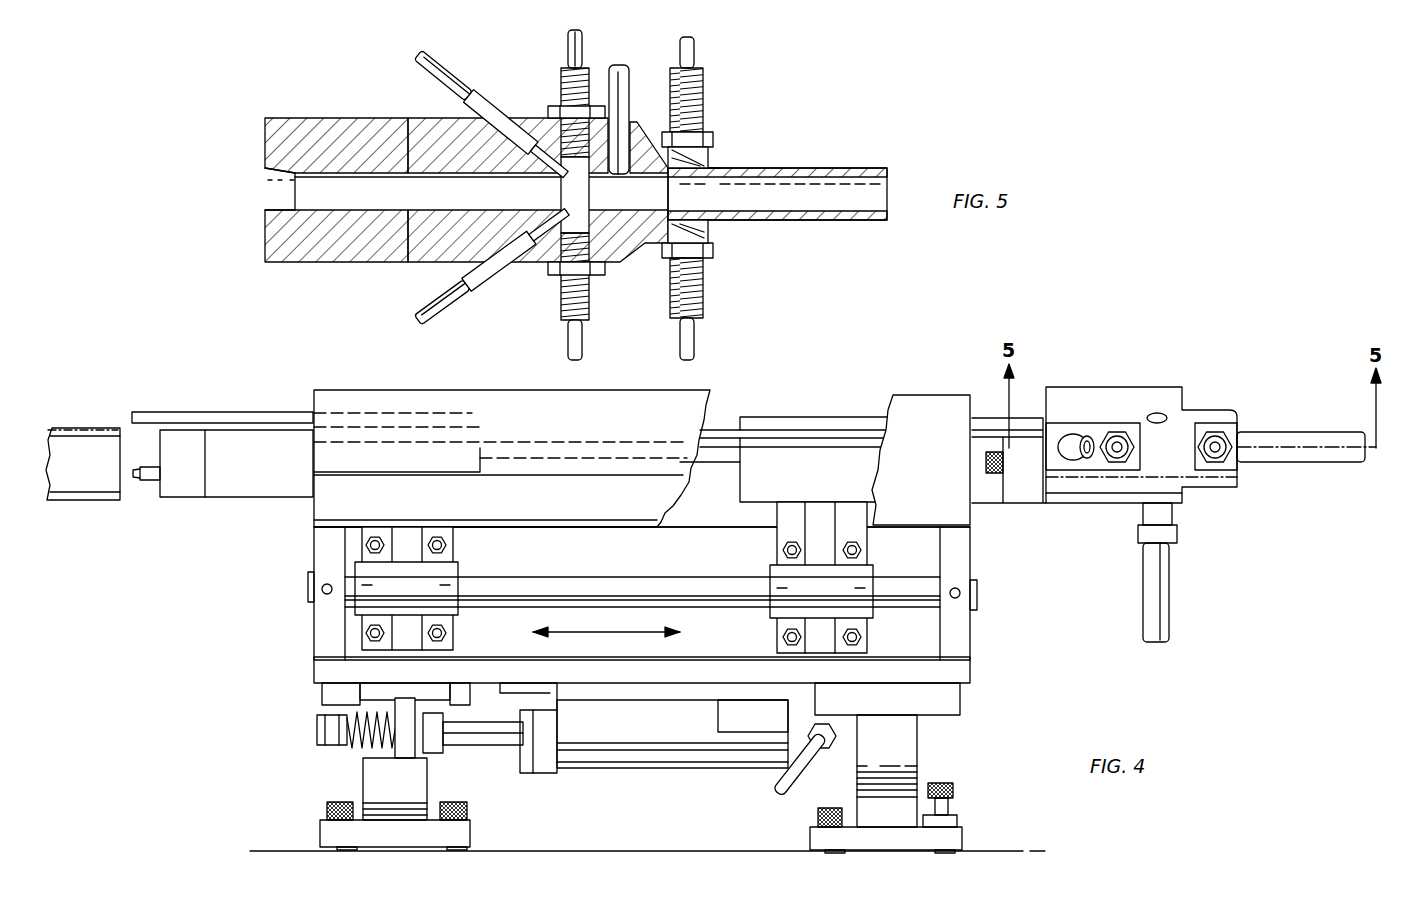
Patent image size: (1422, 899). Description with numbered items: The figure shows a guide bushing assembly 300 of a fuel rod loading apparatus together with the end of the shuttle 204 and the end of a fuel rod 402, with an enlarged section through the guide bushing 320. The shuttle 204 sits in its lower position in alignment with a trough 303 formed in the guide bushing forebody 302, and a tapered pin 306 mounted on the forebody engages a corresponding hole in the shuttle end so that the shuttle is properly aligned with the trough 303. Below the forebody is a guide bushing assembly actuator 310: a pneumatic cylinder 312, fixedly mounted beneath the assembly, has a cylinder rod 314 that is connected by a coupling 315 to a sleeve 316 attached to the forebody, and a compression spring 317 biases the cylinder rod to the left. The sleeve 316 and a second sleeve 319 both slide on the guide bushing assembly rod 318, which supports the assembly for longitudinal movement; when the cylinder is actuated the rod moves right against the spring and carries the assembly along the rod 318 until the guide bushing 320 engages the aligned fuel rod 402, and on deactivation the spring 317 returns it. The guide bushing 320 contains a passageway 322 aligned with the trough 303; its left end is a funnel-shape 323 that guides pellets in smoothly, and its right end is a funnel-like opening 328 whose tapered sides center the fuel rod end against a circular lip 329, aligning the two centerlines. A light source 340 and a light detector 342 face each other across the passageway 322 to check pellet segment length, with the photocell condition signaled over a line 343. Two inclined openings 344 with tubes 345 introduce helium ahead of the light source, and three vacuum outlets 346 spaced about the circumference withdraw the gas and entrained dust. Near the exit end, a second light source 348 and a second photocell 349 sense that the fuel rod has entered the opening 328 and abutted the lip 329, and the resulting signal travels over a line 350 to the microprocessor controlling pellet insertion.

In FIG. 4, the shuttle 204 is at (92, 440).
In FIG. 4, the guide bushing assembly 300 is at (1030, 542).
In FIG. 4, the guide bushing forebody 302 is at (558, 498).
In FIG. 4, the trough 303 is at (720, 443).
In FIG. 4, the tapered pin 306 is at (146, 482).
In FIG. 4, the guide bushing assembly actuator 310 is at (545, 790).
In FIG. 4, the pneumatic cylinder 312 is at (660, 742).
In FIG. 4, the cylinder rod 314 is at (473, 745).
In FIG. 4, the coupling 315 is at (407, 746).
In FIG. 4, the sleeve 316 is at (458, 568).
In FIG. 4, the compression spring 317 is at (357, 750).
In FIG. 4, the guide bushing assembly rod 318 is at (617, 578).
In FIG. 4, the second sleeve 319 is at (778, 568).
In FIG. 5, the guide bushing 320 is at (383, 284).
In FIG. 4, the guide bushing 320 is at (1130, 370).
In FIG. 5, the passageway 322 is at (470, 205).
In FIG. 5, the funnel-shape 323 is at (290, 182).
In FIG. 5, the funnel-like opening 328 is at (717, 163).
In FIG. 5, the circular lip 329 is at (663, 176).
In FIG. 5, the light source 340 is at (584, 220).
In FIG. 4, the light source 340 is at (1135, 447).
In FIG. 5, the light detector 342 is at (558, 108).
In FIG. 5, the line 343 is at (567, 37).
In FIG. 5, the inclined openings 344 is at (550, 211).
In FIG. 4, the inclined openings 344 is at (1088, 435).
In FIG. 5, the tubes 345 is at (456, 75).
In FIG. 5, the vacuum outlets 346 is at (622, 142).
In FIG. 4, the vacuum outlets 346 is at (1160, 413).
In FIG. 5, the second light source 348 is at (712, 231).
In FIG. 4, the second light source 348 is at (1215, 430).
In FIG. 5, the second photocell 349 is at (710, 160).
In FIG. 5, the line 350 is at (697, 51).
In FIG. 5, the fuel rod 402 is at (857, 172).
In FIG. 4, the fuel rod 402 is at (1310, 446).